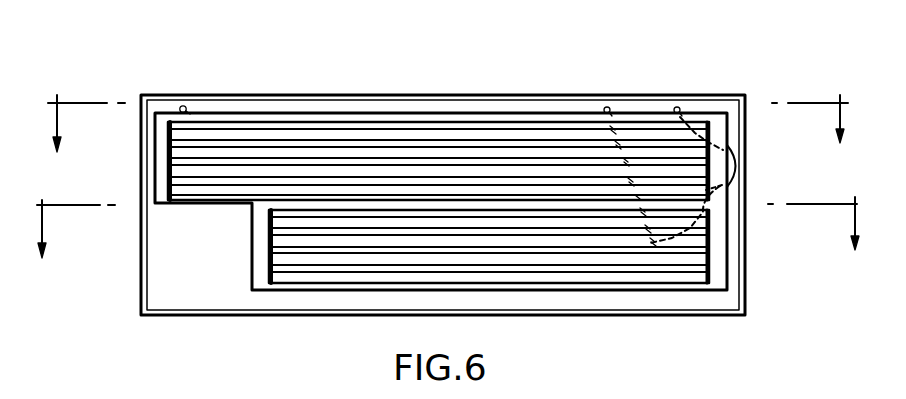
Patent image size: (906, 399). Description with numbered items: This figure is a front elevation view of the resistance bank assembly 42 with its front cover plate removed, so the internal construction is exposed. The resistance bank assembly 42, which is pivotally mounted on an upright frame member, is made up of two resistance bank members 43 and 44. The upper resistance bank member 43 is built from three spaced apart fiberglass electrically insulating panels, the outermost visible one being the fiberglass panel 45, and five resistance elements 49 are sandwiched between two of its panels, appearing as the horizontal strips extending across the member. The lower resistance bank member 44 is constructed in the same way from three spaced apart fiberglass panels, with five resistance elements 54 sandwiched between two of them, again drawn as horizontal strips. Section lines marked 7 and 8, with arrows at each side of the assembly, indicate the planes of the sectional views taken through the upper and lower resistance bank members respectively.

The resistance bank assembly 42 is at (192, 95).
The resistance bank member 43 is at (505, 115).
The fiberglass electrically insulating panel 45 is at (228, 133).
The resistance elements 49 is at (367, 192).
The resistance bank member 44 is at (266, 254).
The resistance elements 54 is at (308, 279).
The section line 7- 7 is at (451, 123).
The section line 8- 8 is at (449, 227).